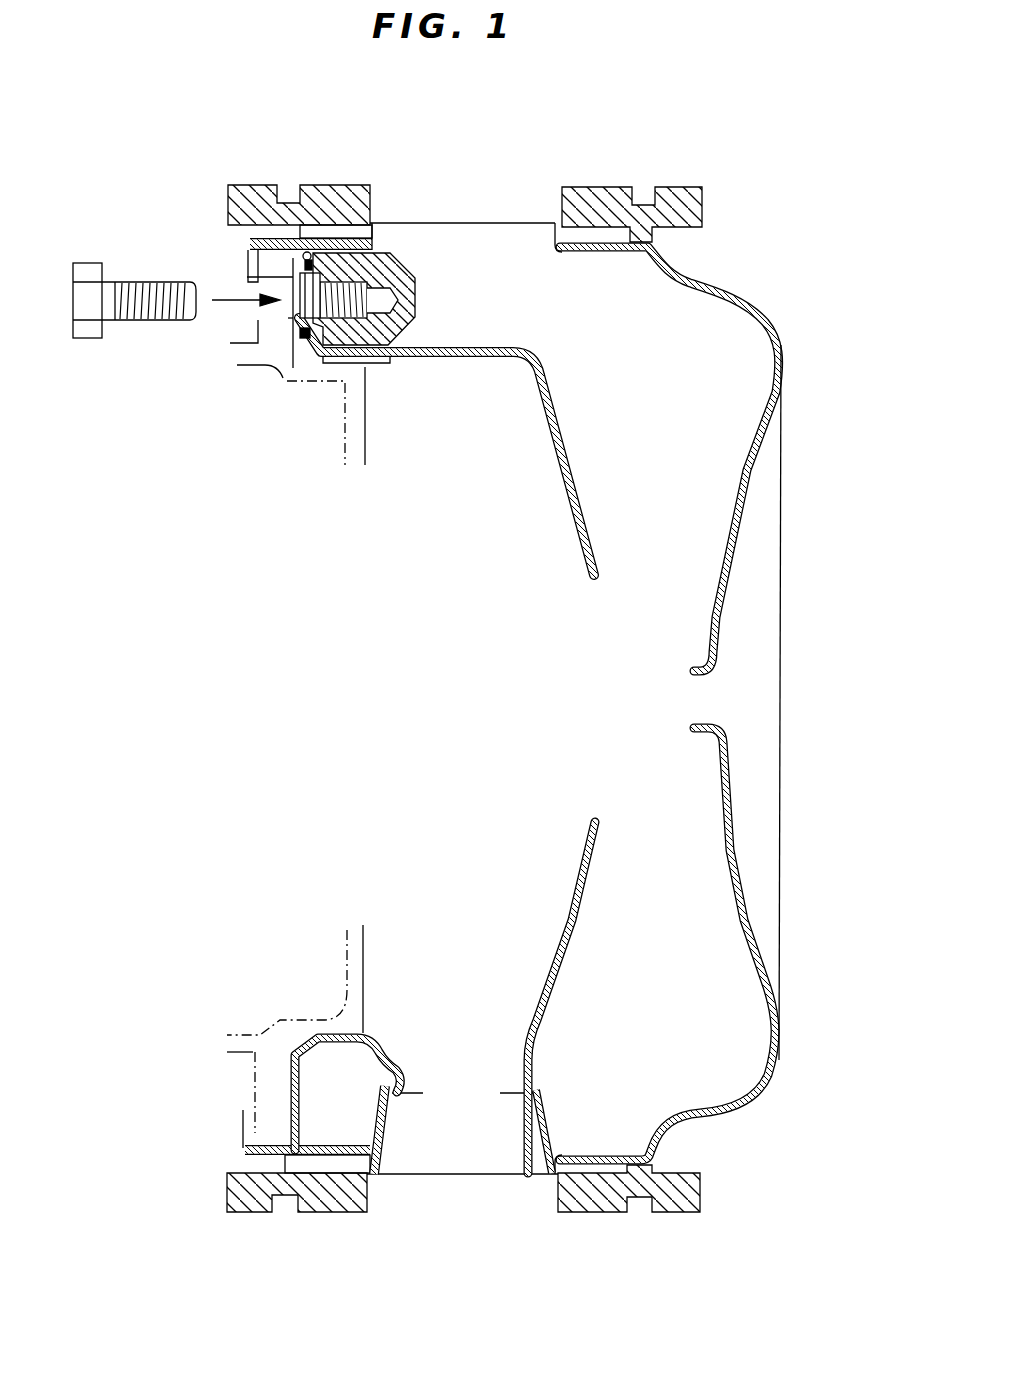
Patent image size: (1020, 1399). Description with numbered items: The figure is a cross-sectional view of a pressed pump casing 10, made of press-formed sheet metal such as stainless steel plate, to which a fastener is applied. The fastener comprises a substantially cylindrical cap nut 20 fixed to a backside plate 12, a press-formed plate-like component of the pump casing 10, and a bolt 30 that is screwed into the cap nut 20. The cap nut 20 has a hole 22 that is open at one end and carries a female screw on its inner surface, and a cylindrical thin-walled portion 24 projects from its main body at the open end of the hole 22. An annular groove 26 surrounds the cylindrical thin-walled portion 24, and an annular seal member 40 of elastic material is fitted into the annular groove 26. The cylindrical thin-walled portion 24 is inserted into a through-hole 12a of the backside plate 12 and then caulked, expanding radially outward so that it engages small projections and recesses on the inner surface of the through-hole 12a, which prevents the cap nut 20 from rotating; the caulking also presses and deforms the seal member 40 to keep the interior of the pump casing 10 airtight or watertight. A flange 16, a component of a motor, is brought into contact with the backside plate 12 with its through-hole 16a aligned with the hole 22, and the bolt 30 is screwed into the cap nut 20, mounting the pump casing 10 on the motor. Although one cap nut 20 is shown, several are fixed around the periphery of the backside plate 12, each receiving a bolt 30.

The pump casing 10 is at (768, 242).
The backside plate 12 is at (467, 358).
The through-hole 12a is at (290, 318).
The flange 16 is at (365, 450).
The through-hole 16a is at (274, 325).
The cap nut 20 is at (390, 262).
The hole 22 is at (312, 262).
The cylindrical thin-walled portion 24 is at (293, 278).
The annular groove 26 is at (302, 258).
The bolt 30 is at (85, 340).
The seal member 40 is at (262, 258).